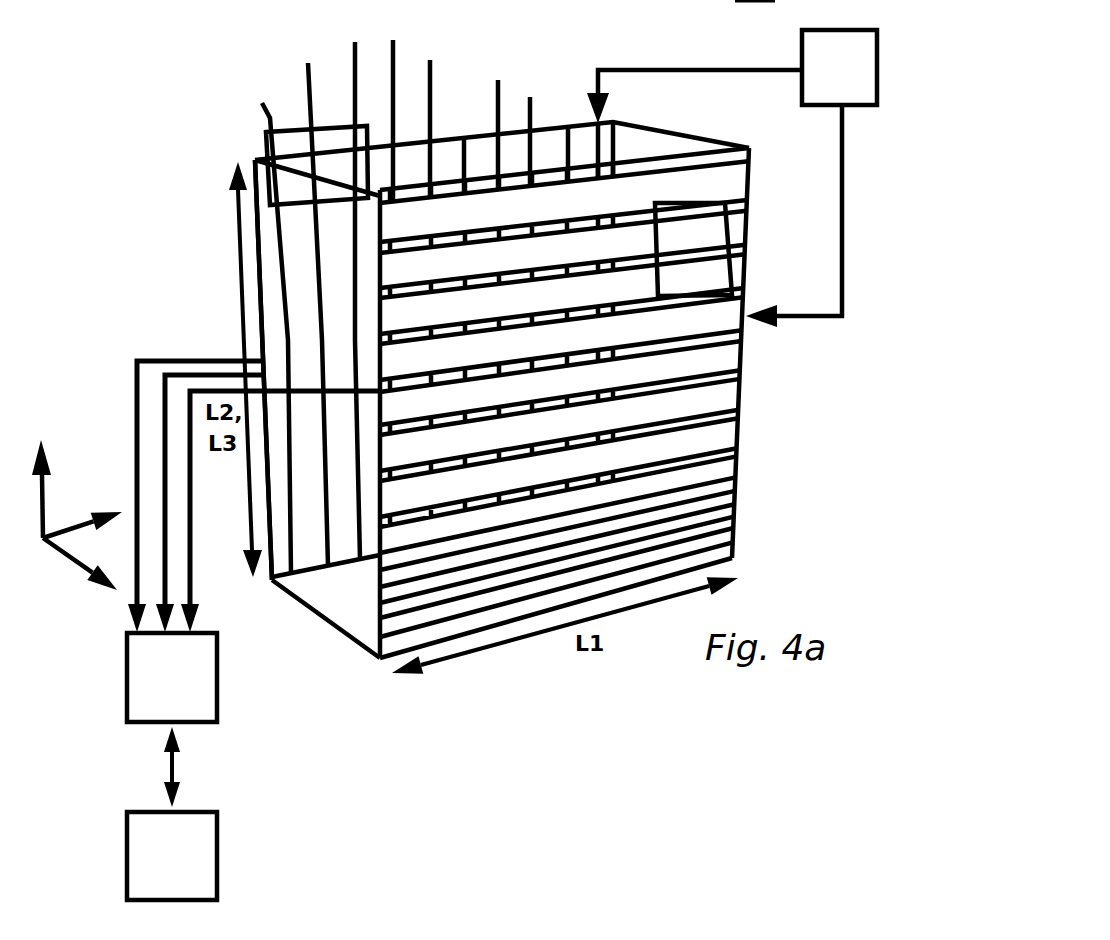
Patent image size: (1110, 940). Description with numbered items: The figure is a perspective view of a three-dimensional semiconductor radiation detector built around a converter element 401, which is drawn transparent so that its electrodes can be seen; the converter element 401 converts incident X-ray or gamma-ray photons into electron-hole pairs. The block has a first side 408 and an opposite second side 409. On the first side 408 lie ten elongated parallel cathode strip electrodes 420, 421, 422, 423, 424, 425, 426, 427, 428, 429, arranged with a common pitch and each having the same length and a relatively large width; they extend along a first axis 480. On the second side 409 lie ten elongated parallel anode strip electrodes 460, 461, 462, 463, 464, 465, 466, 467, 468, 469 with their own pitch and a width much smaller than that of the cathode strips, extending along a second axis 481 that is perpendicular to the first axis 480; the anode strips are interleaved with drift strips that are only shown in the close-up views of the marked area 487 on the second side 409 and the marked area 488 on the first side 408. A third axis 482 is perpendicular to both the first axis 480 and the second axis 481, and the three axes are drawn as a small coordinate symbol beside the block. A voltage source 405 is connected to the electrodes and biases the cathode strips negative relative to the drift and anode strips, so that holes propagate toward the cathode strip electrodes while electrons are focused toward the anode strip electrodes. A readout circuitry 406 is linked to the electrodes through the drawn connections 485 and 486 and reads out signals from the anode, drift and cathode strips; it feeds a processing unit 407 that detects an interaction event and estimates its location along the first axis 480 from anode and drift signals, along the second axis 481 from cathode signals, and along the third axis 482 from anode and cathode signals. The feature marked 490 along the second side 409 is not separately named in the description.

The converter element 401 is at (362, 642).
The voltage source 405 is at (838, 30).
The readout circuitry 406 is at (218, 690).
The processing unit 407 is at (218, 858).
The first side 408 is at (816, 605).
The second side 409 is at (220, 152).
The cathode strip electrode 420 is at (752, 166).
The cathode strip electrode 421 is at (752, 212).
The cathode strip electrode 422 is at (749, 261).
The cathode strip electrode 423 is at (749, 297).
The cathode strip electrode 424 is at (746, 351).
The cathode strip electrode 425 is at (746, 388).
The cathode strip electrode 426 is at (746, 427).
The cathode strip electrode 427 is at (742, 465).
The cathode strip electrode 428 is at (742, 501).
The cathode strip electrode 429 is at (742, 540).
The anode strip electrode 460 is at (262, 103).
The anode strip electrode 461 is at (308, 63).
The anode strip electrode 462 is at (355, 42).
The anode strip electrode 463 is at (393, 40).
The anode strip electrode 464 is at (430, 60).
The anode strip electrode 465 is at (464, 137).
The anode strip electrode 466 is at (498, 80).
The anode strip electrode 467 is at (530, 97).
The anode strip electrode 468 is at (570, 127).
The anode strip electrode 469 is at (608, 121).
The first axis 480 is at (70, 533).
The second axis 481 is at (45, 480).
The third axis 482 is at (78, 570).
The first electrical connection line 485 is at (133, 407).
The electrical connection lines 486 is at (178, 360).
The area 487 is at (302, 125).
The area 488 is at (747, 238).
The lateral wall 490 is at (260, 313).